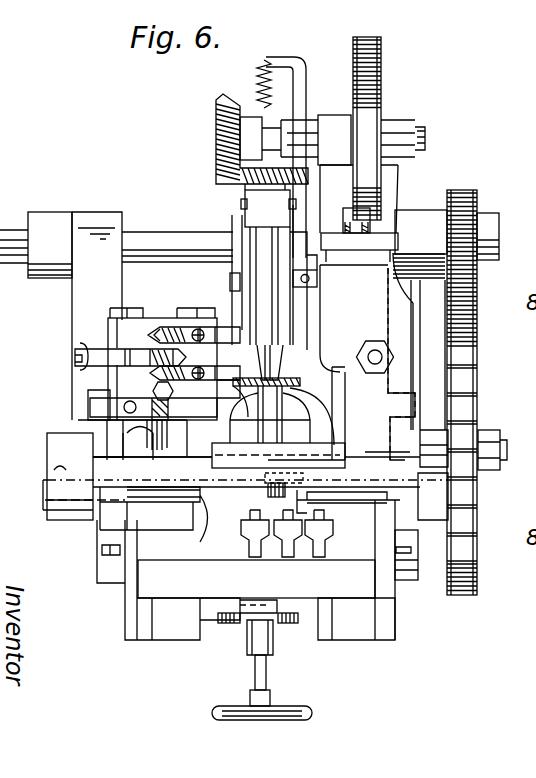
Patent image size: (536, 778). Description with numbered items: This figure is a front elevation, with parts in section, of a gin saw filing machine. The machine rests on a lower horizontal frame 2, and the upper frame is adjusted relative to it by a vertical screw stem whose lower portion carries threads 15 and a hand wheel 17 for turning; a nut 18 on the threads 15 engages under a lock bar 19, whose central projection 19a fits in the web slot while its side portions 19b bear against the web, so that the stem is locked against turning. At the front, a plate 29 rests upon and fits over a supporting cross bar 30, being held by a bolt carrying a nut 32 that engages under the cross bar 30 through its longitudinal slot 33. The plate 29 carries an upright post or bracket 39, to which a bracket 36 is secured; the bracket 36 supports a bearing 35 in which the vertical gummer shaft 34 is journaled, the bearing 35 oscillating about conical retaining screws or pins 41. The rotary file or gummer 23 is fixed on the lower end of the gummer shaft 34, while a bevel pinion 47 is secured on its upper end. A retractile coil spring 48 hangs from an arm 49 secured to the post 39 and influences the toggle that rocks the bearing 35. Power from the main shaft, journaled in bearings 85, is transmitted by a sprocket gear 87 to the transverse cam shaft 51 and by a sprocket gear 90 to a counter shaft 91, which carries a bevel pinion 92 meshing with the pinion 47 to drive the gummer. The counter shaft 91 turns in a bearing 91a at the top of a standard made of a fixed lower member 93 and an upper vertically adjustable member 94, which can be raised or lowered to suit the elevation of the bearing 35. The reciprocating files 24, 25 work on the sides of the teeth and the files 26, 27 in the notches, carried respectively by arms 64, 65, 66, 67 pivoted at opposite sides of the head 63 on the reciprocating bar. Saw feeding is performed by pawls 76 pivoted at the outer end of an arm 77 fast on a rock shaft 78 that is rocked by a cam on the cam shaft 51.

The lower horizontal frame 2 is at (397, 620).
The threads 15 is at (272, 676).
The hand wheel 17 is at (290, 710).
The nut 18 is at (278, 640).
The lock bar 19 is at (257, 618).
The central projection 19a is at (288, 642).
The side portions 19b is at (222, 626).
The rotary file or gummer 23 is at (281, 384).
The reciprocating file 24 is at (180, 378).
The reciprocating file 25 is at (170, 408).
The reciprocating file 26 is at (170, 320).
The reciprocating file 27 is at (172, 368).
The plate 29 is at (220, 452).
The supporting cross bar 30 is at (366, 460).
The nut 32 is at (266, 492).
The longitudinal slot 33 is at (226, 496).
The gummer shaft 34 is at (135, 263).
The bearing 35 is at (272, 300).
The bracket 36 is at (291, 310).
The upright post or bracket 39 is at (308, 388).
The retaining screws or pins 41 is at (318, 280).
The bevel pinion 47 is at (232, 187).
The retractile coil spring 48 is at (258, 82).
The arm 49 is at (299, 60).
The transverse shaft 51 is at (519, 468).
The head 63 is at (152, 325).
The arm 64 is at (215, 345).
The arm 65 is at (148, 392).
The arm 66 is at (207, 325).
The arm 67 is at (128, 352).
The pawls 76 is at (337, 553).
The arm 77 is at (305, 512).
The rock shaft 78 is at (382, 500).
The bearings 85 is at (78, 292).
The sprocket gear 87 is at (479, 388).
The sprocket gear 90 is at (380, 88).
The counter shaft 91 is at (285, 122).
The bearing 91a is at (395, 188).
The bevel pinion 92 is at (218, 130).
The fixed lower member 93 is at (400, 308).
The upper vertically adjustable member 94 is at (401, 270).